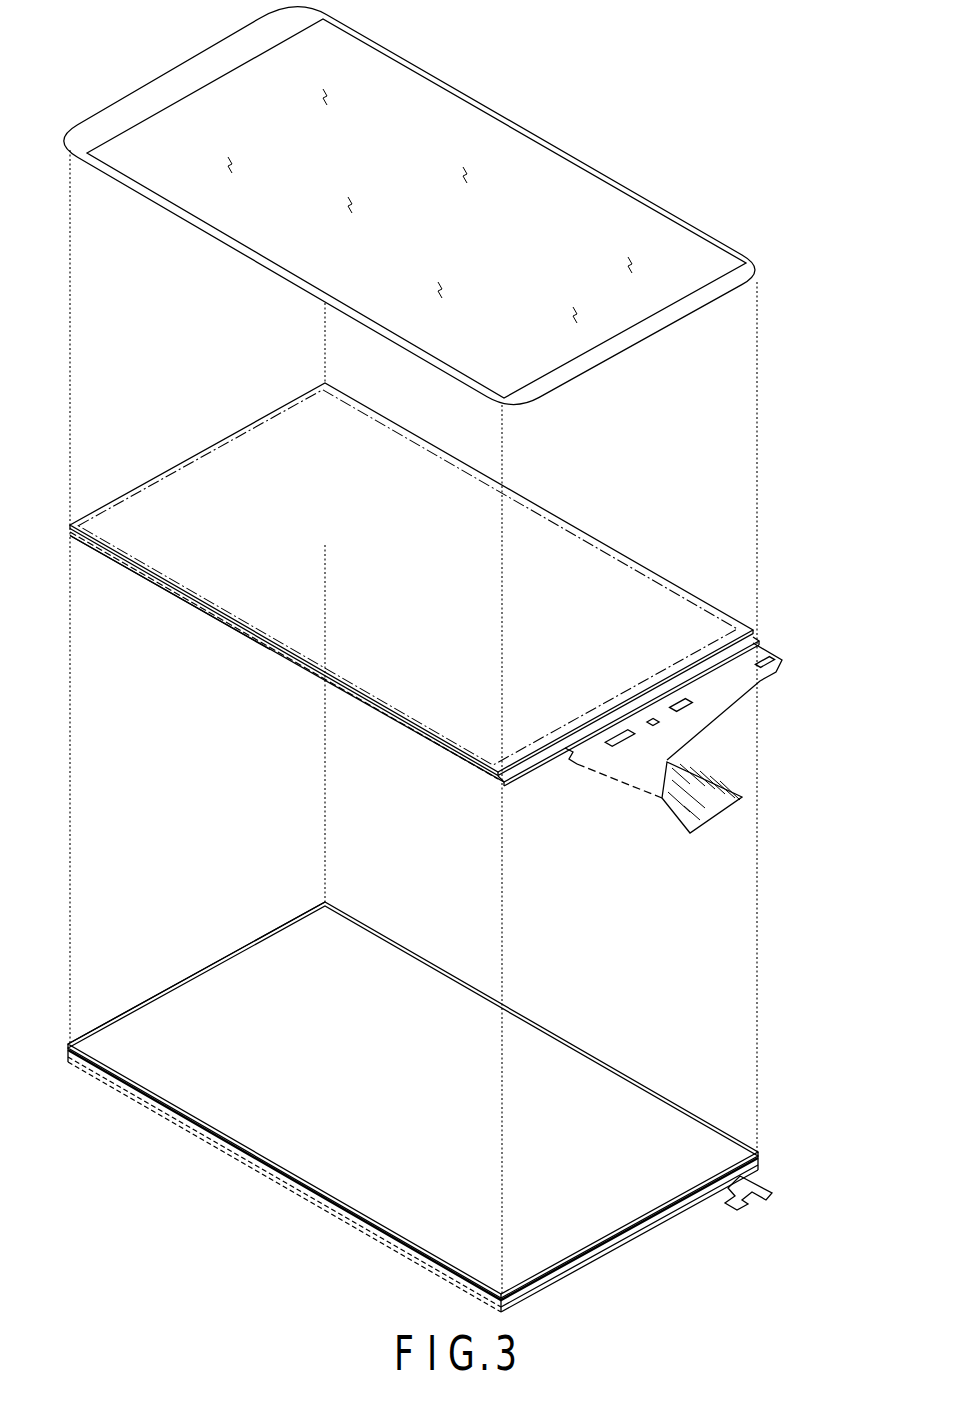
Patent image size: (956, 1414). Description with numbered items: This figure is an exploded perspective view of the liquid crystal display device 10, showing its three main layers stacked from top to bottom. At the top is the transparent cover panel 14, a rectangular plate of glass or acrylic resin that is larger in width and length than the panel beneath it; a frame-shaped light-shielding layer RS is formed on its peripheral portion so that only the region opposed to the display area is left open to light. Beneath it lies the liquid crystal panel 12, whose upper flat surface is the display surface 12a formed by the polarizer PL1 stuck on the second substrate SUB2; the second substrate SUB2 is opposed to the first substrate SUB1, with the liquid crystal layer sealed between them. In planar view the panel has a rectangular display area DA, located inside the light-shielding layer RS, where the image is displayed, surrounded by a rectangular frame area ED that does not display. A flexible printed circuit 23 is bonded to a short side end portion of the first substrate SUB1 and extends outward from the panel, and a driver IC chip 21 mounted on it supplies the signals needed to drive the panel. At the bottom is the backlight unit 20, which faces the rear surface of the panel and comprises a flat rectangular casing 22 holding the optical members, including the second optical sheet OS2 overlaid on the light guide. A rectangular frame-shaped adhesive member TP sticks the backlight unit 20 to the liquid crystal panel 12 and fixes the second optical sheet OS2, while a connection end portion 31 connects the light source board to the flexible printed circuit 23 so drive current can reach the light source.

The liquid crystal display device 10 is at (751, 218).
The cover panel 14 is at (409, 207).
The light-shielding layer RS is at (160, 88).
The liquid crystal panel 12 is at (426, 613).
The polarizer PL1 is at (213, 465).
The second substrate SUB2 is at (460, 727).
The first substrate SUB1 is at (520, 770).
The display surface 12a is at (195, 567).
The display area DA is at (222, 600).
The frame area ED is at (300, 650).
The driver IC chip 21 is at (625, 745).
The flexible printed circuit 23 is at (670, 763).
The backlight unit 20 is at (427, 1107).
The adhesive member TP is at (648, 1090).
The second optical sheet OS2 is at (273, 972).
The casing 22 is at (345, 1225).
The connection end portion 31 is at (748, 1190).